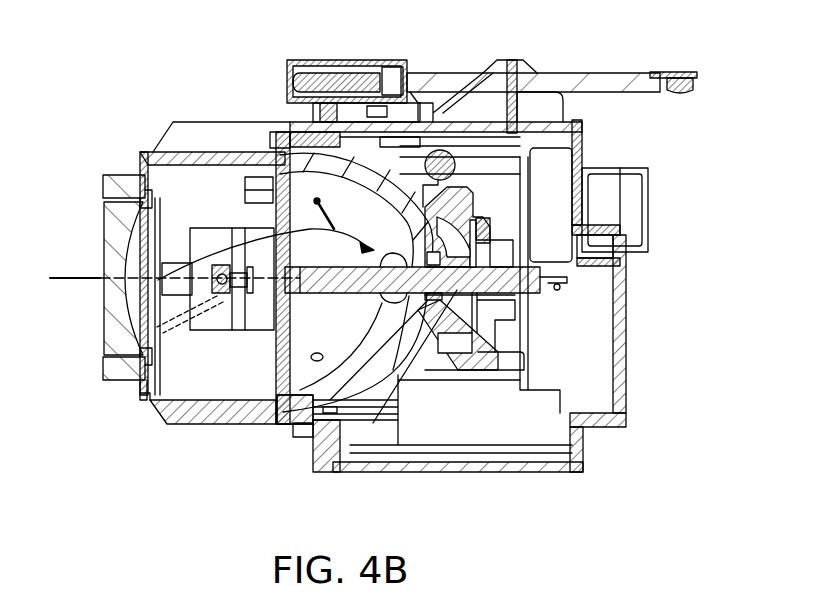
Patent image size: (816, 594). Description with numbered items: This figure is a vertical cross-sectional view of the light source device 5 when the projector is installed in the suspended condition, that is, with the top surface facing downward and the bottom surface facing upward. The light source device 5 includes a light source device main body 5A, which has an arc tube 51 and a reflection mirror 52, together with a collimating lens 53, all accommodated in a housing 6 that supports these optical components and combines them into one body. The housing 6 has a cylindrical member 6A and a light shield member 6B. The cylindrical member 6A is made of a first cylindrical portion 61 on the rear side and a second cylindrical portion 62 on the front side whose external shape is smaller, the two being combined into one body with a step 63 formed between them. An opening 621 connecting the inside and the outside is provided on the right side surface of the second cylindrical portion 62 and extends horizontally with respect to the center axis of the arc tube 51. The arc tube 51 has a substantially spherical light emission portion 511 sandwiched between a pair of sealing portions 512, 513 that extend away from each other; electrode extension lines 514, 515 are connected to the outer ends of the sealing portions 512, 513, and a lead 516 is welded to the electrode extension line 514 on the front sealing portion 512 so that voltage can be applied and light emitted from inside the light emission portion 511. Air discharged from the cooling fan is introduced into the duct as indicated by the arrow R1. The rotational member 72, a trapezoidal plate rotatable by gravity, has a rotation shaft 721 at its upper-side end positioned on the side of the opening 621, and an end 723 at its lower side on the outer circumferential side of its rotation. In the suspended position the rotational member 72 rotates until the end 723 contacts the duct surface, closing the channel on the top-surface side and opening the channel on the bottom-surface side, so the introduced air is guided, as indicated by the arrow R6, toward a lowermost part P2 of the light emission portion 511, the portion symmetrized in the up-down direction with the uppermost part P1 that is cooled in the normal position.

The light source device 5 is at (660, 44).
The light source device main body 5A is at (469, 346).
The housing 6 is at (410, 255).
The cylindrical member 6A is at (280, 231).
The light shield member 6B is at (627, 325).
The arc tube 51 is at (469, 329).
The reflection mirror 52 is at (443, 375).
The collimating lens 53 is at (107, 210).
The first cylindrical portion 61 is at (337, 94).
The second cylindrical portion 62 is at (215, 246).
The step 63 is at (275, 143).
The rotational member 72 is at (257, 324).
The rotation shaft 721 is at (214, 262).
The end 723 is at (170, 333).
The opening 621 is at (203, 330).
The light emission portion 511 is at (389, 312).
The sealing portion 512 is at (340, 283).
The sealing portion 513 is at (507, 253).
The electrode extension line 514 is at (275, 405).
The electrode extension line 515 is at (560, 274).
The lead 516 is at (313, 294).
The arrow R1 is at (70, 276).
The arrow R6 is at (305, 232).
The uppermost part P1 is at (396, 262).
The lowermost part P2 is at (386, 252).